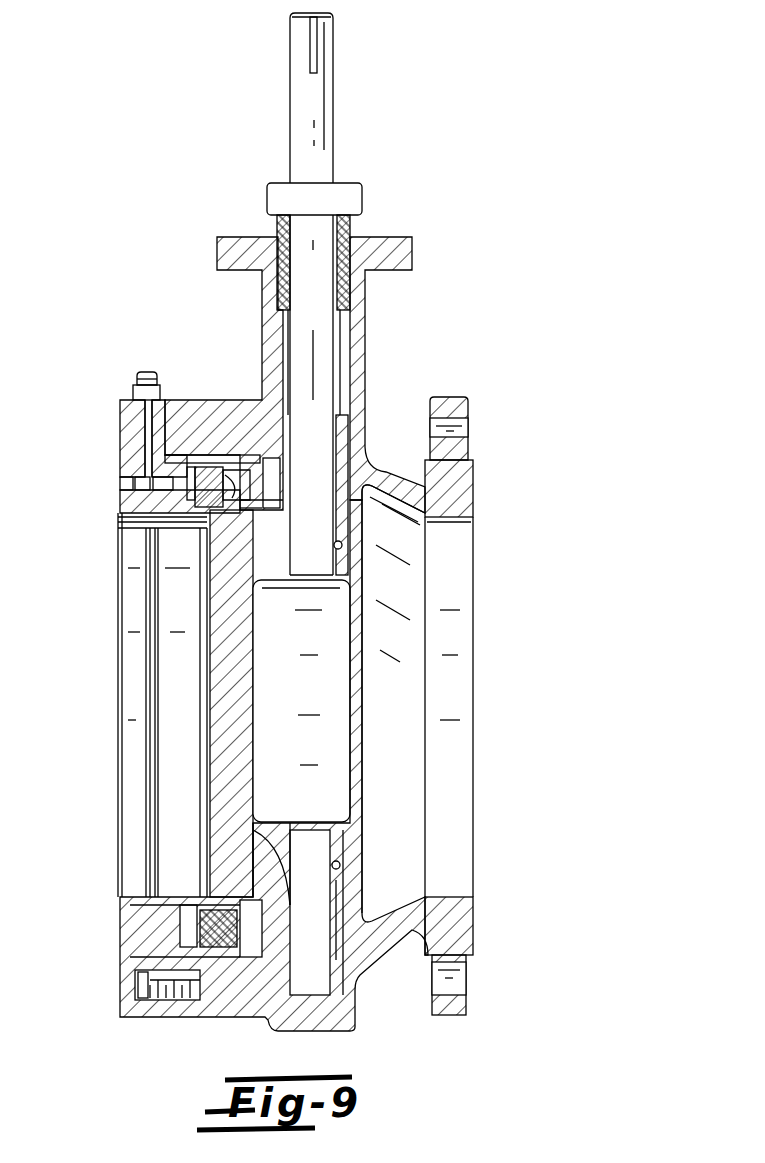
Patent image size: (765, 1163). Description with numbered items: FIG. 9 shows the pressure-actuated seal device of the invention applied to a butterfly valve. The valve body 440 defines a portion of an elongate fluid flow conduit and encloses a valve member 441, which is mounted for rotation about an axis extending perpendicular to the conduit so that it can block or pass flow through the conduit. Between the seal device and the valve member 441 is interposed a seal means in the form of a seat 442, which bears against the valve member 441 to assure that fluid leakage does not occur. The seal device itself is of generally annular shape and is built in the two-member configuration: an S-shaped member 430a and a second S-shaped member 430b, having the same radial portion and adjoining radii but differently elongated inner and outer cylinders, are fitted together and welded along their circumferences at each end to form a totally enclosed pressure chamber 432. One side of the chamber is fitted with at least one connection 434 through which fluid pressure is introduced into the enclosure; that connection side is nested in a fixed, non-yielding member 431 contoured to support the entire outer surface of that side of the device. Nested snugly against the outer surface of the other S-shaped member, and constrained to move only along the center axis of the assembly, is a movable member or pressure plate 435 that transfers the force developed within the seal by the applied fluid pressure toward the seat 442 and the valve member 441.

The valve body 440 is at (552, 382).
The S-shaped member 430a is at (217, 508).
The S-shaped member 430b is at (186, 500).
The fixed non-yielding member 431 is at (125, 507).
The pressure chamber 432 is at (164, 705).
The connection 434 is at (135, 474).
The movable member or pressure plate 435 is at (215, 475).
The valve member 441 is at (232, 708).
The seat 442 is at (226, 820).